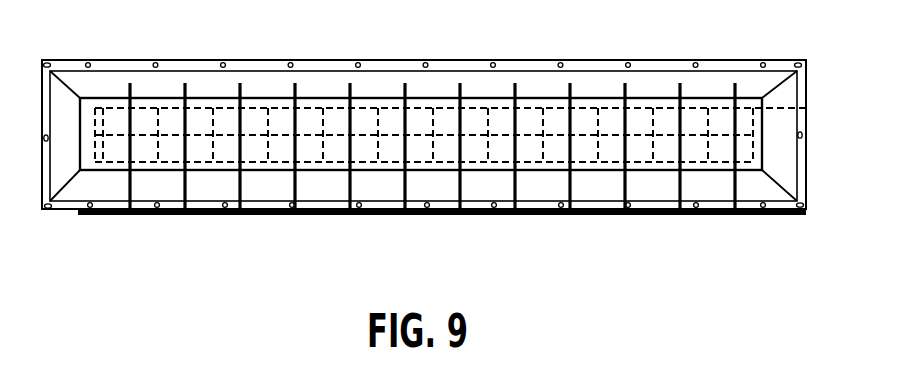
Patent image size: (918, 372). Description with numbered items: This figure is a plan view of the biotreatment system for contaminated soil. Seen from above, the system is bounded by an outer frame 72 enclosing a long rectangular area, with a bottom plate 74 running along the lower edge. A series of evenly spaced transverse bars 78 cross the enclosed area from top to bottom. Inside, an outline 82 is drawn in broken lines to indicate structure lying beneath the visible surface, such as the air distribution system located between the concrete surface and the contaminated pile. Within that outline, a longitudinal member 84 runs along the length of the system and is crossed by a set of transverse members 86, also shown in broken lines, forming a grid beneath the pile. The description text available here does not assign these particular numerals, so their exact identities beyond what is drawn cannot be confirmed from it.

The frame 72 is at (808, 209).
The bottom plate 74 is at (333, 215).
The transverse bars 78 is at (462, 181).
The hidden element outline 82 is at (808, 108).
The longitudinal member 84 is at (390, 110).
The transverse member 86 is at (437, 128).